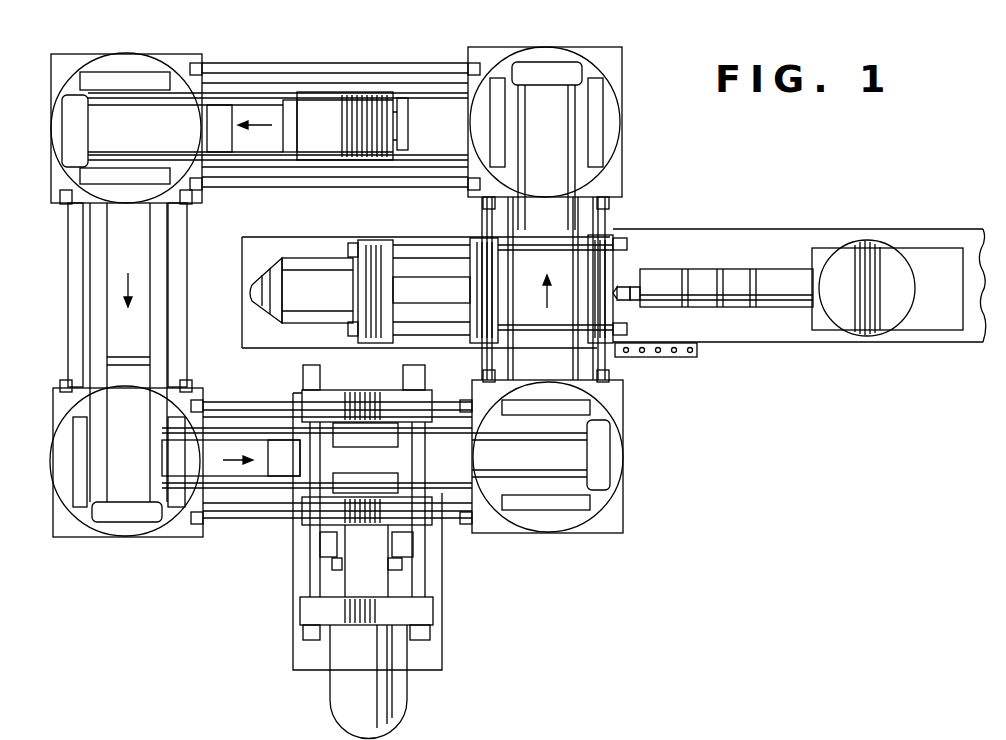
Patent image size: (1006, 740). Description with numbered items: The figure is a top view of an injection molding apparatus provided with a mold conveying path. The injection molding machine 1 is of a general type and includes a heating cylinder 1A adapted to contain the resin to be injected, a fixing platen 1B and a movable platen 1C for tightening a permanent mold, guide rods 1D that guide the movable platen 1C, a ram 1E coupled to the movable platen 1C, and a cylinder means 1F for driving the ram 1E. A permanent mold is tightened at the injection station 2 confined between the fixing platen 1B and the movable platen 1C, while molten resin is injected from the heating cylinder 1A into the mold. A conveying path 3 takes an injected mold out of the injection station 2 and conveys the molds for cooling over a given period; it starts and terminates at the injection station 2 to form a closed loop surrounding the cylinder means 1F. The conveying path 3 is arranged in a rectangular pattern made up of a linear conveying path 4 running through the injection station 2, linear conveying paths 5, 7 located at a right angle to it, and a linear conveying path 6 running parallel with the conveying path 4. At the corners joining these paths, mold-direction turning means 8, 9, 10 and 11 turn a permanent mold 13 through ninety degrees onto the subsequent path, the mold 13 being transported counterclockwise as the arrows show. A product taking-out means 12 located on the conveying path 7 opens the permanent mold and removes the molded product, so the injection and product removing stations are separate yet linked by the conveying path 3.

The injection molding machine 1 is at (817, 228).
The heating cylinder 1A is at (700, 268).
The fixing platen 1B is at (607, 233).
The movable platen 1C is at (477, 247).
The guide rods 1D is at (420, 243).
The ram 1E is at (403, 273).
The cylinder means 1F is at (298, 255).
The injection station 2 is at (563, 268).
The conveying path 3 is at (220, 537).
The linear conveying path 4 is at (555, 363).
The linear conveying path 5 is at (358, 63).
The linear conveying path 6 is at (113, 327).
The linear conveying path 7 is at (250, 477).
The mold-direction turning means 8 is at (543, 47).
The mold-direction turning means 9 is at (132, 55).
The mold-direction turning means 10 is at (83, 535).
The mold-direction turning means 11 is at (550, 535).
The product taking-out means 12 is at (443, 627).
The permanent mold 13 is at (317, 95).